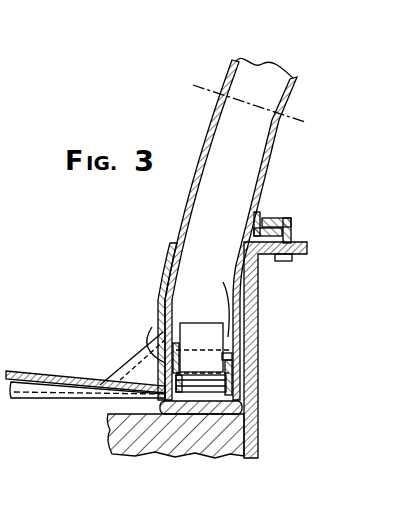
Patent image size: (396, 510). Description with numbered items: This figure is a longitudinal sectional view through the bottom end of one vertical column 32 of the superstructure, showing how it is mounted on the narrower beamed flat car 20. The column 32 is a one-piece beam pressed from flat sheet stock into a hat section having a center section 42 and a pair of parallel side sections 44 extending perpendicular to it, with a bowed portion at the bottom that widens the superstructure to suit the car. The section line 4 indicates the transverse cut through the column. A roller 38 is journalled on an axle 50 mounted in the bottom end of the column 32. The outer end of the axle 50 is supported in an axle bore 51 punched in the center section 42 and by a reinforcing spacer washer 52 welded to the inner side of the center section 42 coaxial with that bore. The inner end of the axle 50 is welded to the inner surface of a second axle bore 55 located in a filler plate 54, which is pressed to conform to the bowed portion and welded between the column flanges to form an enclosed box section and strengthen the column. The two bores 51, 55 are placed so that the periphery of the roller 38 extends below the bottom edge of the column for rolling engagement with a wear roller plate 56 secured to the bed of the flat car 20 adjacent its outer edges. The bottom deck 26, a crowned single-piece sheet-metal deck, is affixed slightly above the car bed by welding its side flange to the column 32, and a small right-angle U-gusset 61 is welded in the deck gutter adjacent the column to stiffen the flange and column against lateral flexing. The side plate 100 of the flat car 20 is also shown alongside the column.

The flat car 20 is at (177, 447).
The bottom deck 26 is at (78, 373).
The column 32 is at (226, 209).
The roller 38 is at (195, 338).
The section line 4- 4 is at (241, 105).
The center section 42 is at (266, 174).
The side section 44 is at (250, 68).
The axle 50 is at (232, 357).
The axle bore 51 is at (238, 378).
The reinforcing spacer washer 52 is at (213, 302).
The filler plate 54 is at (184, 204).
The axle bore 55 is at (143, 337).
The wear roller plate 56 is at (238, 410).
The U-gusset 61 is at (125, 370).
The side plate 100 is at (258, 288).